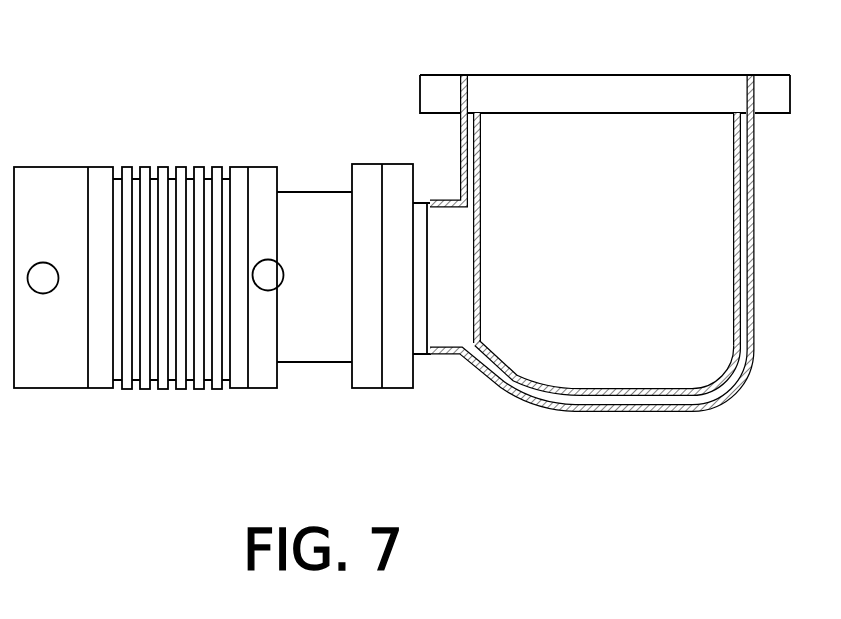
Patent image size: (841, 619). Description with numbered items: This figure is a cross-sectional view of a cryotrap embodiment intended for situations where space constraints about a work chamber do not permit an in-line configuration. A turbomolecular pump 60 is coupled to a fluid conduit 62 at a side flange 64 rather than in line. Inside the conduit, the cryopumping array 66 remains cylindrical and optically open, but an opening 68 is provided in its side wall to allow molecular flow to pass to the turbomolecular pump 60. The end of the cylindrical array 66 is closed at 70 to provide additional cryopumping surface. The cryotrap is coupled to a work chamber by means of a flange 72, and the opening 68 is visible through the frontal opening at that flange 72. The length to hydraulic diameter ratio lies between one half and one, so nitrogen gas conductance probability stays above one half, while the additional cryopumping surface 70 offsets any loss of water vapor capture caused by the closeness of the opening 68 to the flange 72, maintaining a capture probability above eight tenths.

The turbomolecular pump 60 is at (165, 167).
The fluid conduit 62 is at (755, 200).
The side flange 64 is at (393, 390).
The cryopumping array 66 is at (481, 152).
The opening 68 is at (462, 277).
The closed end 70 is at (548, 387).
The flange 72 is at (477, 73).